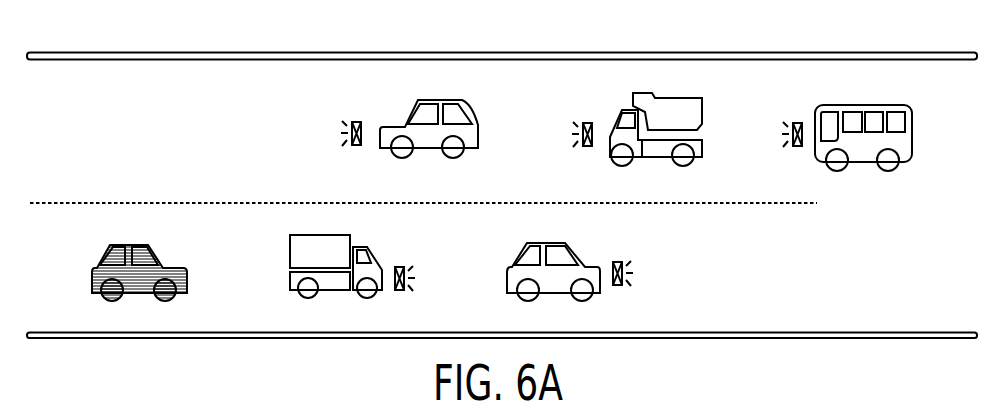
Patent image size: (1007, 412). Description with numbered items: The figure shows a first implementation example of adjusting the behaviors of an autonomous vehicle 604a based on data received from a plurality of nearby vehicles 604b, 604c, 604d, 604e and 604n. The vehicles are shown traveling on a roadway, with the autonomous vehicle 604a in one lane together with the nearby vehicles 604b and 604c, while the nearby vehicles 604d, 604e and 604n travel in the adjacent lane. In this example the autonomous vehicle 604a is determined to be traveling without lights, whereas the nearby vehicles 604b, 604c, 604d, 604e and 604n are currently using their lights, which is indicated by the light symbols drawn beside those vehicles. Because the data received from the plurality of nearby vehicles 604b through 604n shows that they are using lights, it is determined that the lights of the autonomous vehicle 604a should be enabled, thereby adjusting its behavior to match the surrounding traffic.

The autonomous vehicle 604a is at (92, 278).
The nearby vehicle 604b is at (290, 260).
The nearby vehicle 604c is at (542, 242).
The nearby vehicle 604d is at (438, 100).
The nearby vehicle 604e is at (662, 97).
The nearby vehicle 604n is at (913, 142).